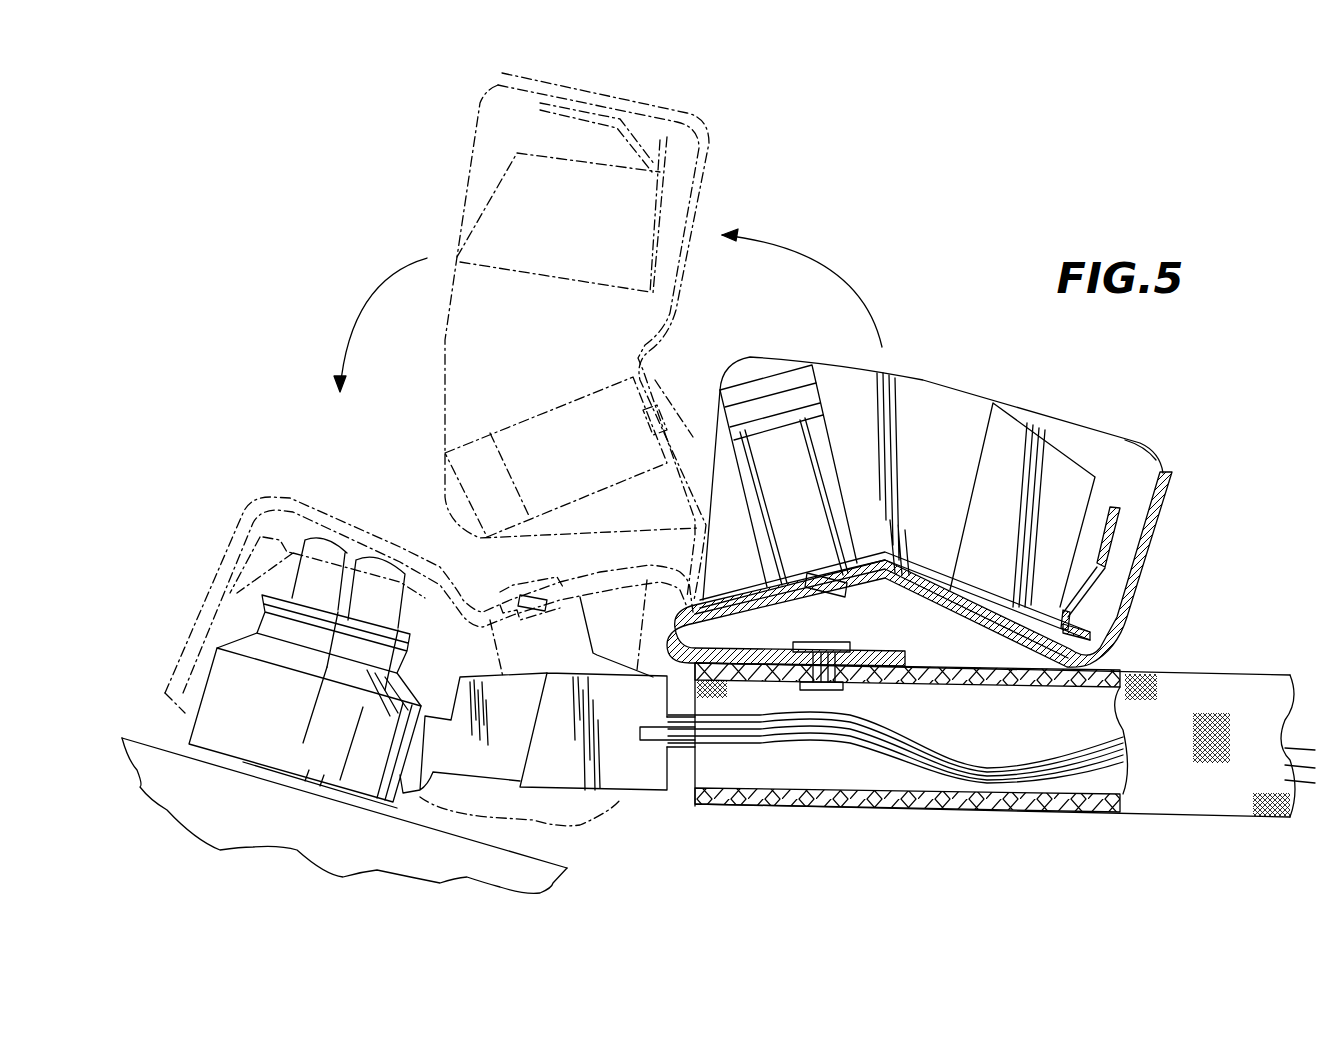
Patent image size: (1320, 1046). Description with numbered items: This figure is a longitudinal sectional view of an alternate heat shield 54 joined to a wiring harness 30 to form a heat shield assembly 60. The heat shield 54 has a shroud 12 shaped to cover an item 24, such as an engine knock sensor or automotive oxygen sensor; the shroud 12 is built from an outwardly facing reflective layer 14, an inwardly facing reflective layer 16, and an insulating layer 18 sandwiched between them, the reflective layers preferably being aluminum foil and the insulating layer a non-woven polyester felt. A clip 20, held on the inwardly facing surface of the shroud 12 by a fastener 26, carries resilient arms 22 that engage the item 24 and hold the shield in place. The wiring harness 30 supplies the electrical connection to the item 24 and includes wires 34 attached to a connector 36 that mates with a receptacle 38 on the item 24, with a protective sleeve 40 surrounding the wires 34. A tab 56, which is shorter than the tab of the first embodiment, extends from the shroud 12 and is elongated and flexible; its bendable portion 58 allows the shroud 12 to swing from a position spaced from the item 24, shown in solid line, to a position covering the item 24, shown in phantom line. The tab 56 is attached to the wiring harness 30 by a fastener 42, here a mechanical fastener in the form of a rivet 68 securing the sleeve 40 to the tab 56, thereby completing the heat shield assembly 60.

The shroud 12 is at (1137, 580).
The outwardly facing reflective layer 14 is at (1160, 513).
The inwardly facing reflective layer 16 is at (1113, 465).
The insulating layer 18 is at (1127, 610).
The clip 20 is at (1000, 480).
The resilient arms 22 is at (783, 457).
The item 24 is at (280, 728).
The fastener 26 is at (850, 560).
The wiring harness 30 is at (807, 783).
The wires 34 is at (993, 777).
The connector 36 is at (633, 763).
The receptacle 38 is at (493, 745).
The protective sleeve 40 is at (887, 812).
The fastener 42 is at (837, 691).
The heat shield 54 is at (1223, 457).
The tab 56 is at (868, 651).
The bendable portion 58 is at (745, 628).
The heat shield assembly 60 is at (892, 222).
The rivet 68 is at (840, 690).